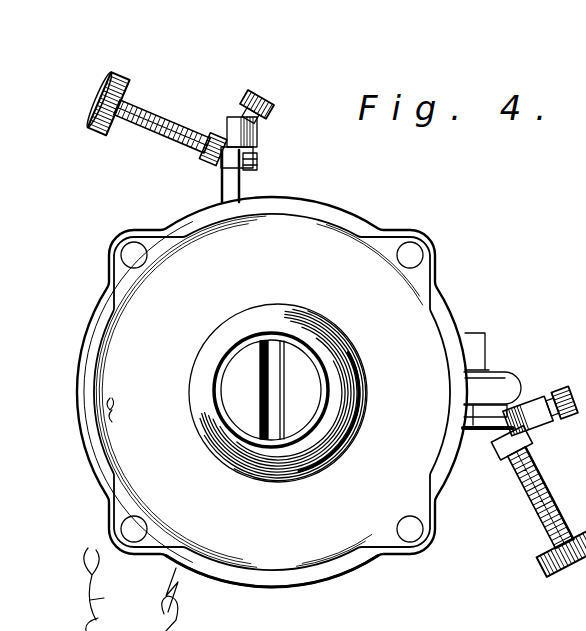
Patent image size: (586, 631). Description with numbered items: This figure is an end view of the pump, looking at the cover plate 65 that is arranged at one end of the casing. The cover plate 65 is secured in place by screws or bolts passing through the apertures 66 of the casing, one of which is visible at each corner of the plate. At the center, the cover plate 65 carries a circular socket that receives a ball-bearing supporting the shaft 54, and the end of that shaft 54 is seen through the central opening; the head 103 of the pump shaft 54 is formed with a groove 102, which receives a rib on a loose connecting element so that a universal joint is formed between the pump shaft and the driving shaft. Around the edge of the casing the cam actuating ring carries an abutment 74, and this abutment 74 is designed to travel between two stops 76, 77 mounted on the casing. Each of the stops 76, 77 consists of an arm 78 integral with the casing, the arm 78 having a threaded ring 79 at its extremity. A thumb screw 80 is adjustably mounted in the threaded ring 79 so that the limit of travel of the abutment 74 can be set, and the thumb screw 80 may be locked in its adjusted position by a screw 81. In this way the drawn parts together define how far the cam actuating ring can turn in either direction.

The shaft 54 is at (293, 362).
The cover plate 65 is at (414, 310).
The apertures 66 is at (423, 531).
The abutment 74 is at (472, 353).
The stop 76 is at (258, 162).
The stop 77 is at (529, 404).
The arm 78 is at (232, 183).
The threaded ring 79 is at (222, 134).
The thumb screw 80 is at (150, 111).
The screw 81 is at (258, 98).
The groove 102 is at (275, 400).
The head 103 is at (315, 391).